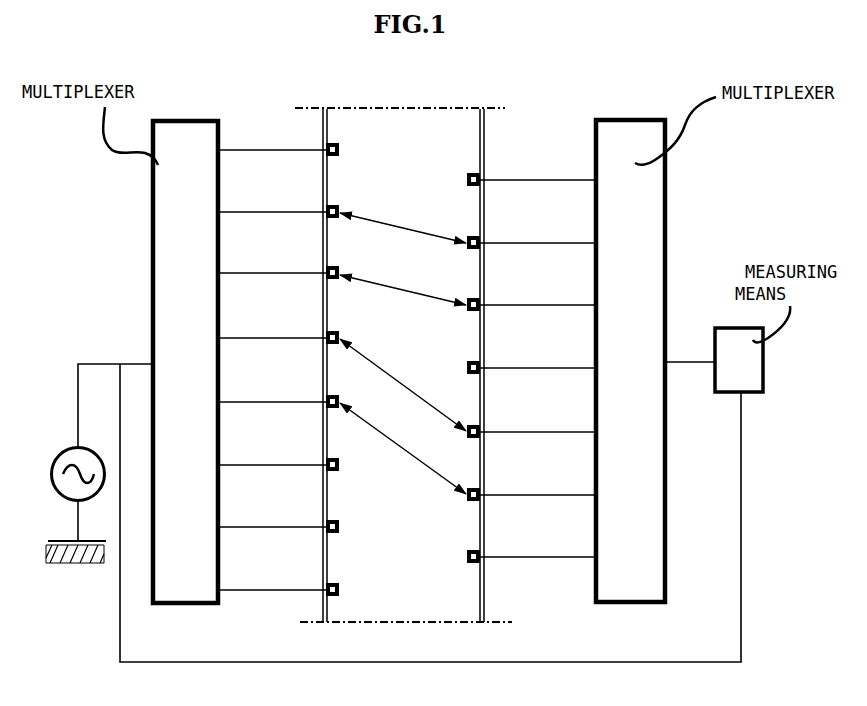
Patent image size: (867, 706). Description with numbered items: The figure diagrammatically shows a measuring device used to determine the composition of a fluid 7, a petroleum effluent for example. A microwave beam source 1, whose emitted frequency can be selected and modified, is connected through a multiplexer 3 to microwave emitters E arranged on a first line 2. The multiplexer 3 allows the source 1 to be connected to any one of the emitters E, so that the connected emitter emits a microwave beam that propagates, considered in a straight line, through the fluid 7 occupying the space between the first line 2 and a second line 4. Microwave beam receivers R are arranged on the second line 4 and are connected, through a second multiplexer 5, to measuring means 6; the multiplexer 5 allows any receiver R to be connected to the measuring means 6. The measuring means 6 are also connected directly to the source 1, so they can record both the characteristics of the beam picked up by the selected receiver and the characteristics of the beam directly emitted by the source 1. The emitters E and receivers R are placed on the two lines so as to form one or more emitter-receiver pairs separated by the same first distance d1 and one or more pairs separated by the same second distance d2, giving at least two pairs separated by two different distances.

The microwave beam source 1 is at (75, 459).
The first line 2 is at (322, 125).
The multiplexer 3 is at (185, 362).
The second line 4 is at (484, 130).
The multiplexer 5 is at (630, 361).
The measuring means 6 is at (739, 360).
The fluid 7 is at (403, 365).
The microwave emitters E is at (342, 188).
The first distance d1 is at (403, 253).
The second distance d2 is at (403, 416).
The microwave beam receivers R is at (468, 502).